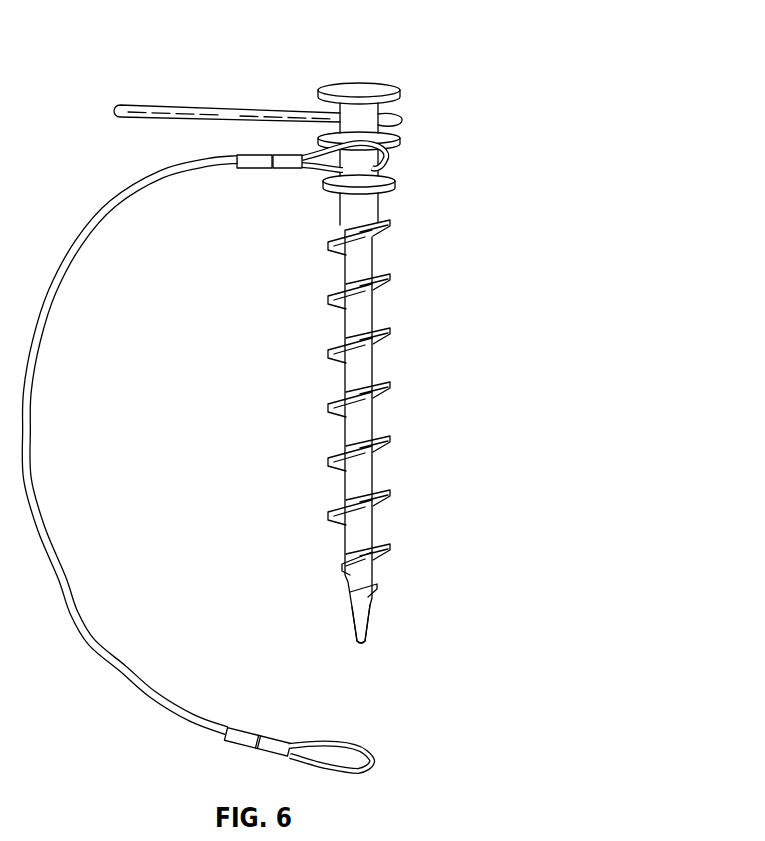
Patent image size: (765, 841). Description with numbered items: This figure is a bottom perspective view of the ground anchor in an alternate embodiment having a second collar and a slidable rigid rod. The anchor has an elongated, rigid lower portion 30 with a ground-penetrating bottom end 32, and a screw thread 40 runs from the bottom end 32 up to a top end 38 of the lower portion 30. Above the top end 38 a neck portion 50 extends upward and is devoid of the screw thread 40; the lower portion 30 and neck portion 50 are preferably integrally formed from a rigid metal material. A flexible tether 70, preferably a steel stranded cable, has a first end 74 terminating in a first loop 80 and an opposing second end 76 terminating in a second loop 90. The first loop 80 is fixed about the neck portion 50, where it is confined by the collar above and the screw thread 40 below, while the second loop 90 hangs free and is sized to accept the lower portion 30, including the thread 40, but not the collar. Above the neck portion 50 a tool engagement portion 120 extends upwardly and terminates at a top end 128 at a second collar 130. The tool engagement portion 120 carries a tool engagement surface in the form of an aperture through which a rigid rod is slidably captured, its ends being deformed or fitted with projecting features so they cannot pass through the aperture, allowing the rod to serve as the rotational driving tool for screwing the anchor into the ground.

The lower portion 30 is at (355, 463).
The bottom end 32 is at (360, 642).
The top end 38 is at (388, 223).
The screw thread 40 is at (340, 404).
The neck portion 50 is at (407, 163).
The flexible tether 70 is at (70, 260).
The first end 74 is at (285, 169).
The second end 76 is at (248, 728).
The first loop 80 is at (333, 189).
The second loop 90 is at (367, 748).
The tool engagement portion 120 is at (399, 76).
The top end 128 is at (369, 53).
The second collar 130 is at (341, 82).